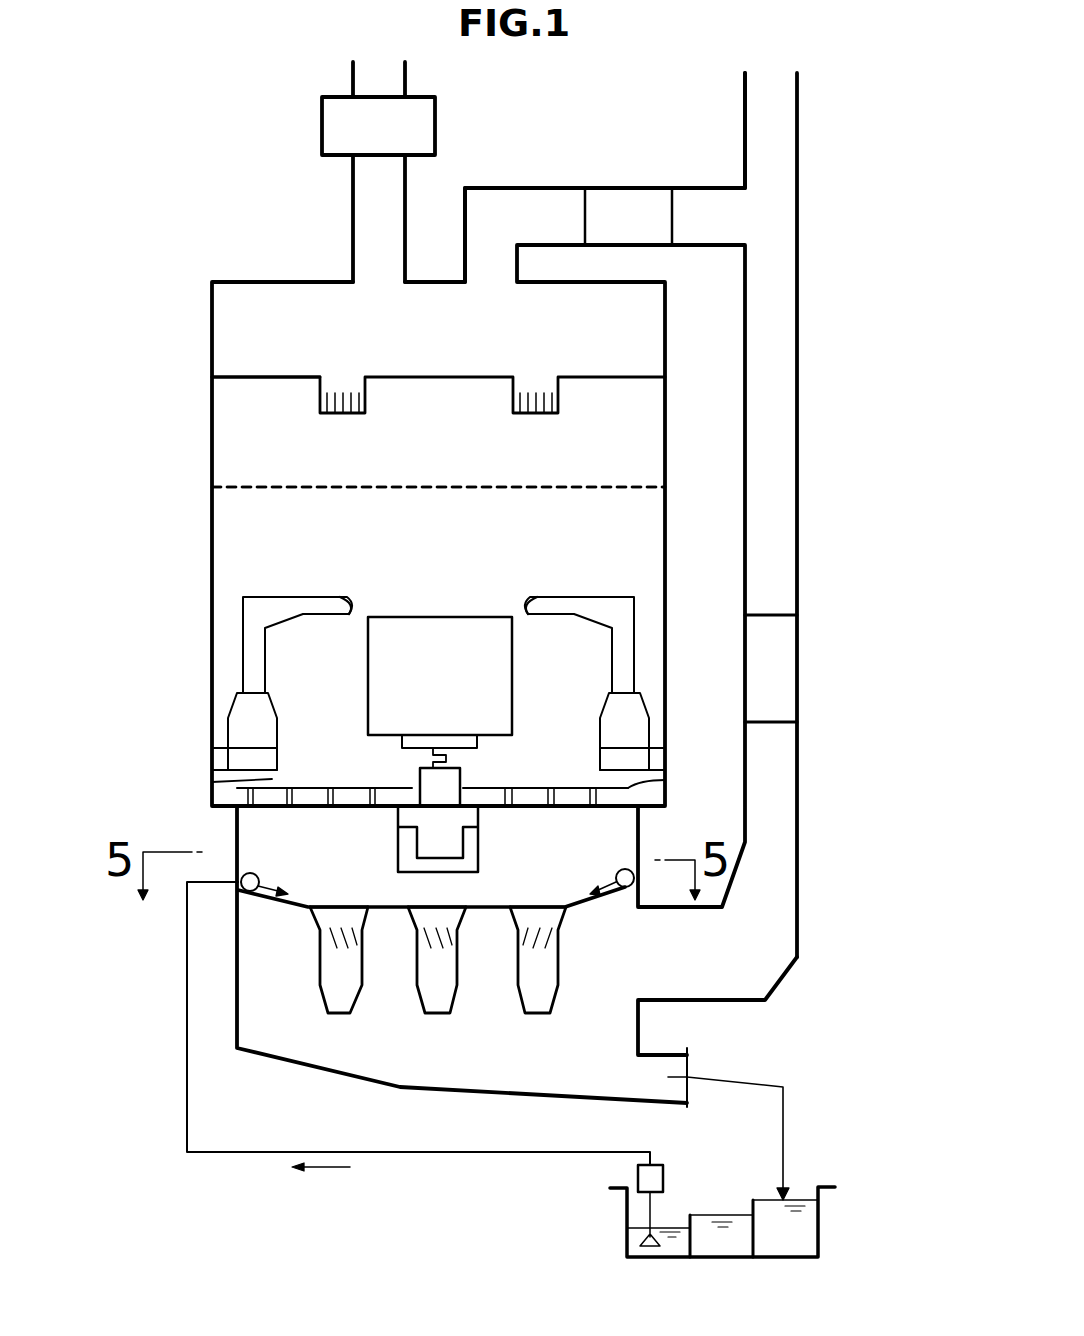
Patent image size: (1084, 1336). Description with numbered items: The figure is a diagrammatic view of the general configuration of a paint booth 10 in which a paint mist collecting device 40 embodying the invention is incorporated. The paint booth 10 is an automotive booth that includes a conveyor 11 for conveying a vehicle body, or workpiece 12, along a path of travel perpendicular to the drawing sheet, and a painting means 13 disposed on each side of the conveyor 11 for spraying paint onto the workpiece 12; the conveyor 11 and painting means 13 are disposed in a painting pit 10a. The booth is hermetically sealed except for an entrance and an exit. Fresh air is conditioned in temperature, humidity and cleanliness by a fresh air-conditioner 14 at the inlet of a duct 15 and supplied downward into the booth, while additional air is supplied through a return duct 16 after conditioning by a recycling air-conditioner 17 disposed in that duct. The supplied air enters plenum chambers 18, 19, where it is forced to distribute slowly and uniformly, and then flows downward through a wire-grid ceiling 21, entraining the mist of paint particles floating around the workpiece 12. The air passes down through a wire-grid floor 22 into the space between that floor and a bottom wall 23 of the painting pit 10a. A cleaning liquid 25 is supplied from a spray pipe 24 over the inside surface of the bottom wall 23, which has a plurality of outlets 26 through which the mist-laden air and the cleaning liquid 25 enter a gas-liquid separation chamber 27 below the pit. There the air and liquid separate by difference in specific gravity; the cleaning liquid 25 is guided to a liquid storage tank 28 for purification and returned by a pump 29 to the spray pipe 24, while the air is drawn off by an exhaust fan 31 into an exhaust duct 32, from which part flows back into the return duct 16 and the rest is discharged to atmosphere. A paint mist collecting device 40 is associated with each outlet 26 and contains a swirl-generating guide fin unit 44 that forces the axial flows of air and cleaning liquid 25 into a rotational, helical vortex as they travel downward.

The paint booth 10 is at (190, 268).
The painting pit 10a is at (255, 562).
The conveyor 11 is at (418, 782).
The vehicle body 12 is at (440, 632).
The painting means 13 is at (348, 600).
The fresh air-conditioner 14 is at (418, 128).
The duct 15 is at (353, 236).
The return duct 16 is at (711, 190).
The recycling air-conditioner 17 is at (621, 202).
The plenum chamber 18 is at (212, 330).
The plenum chamber 19 is at (212, 432).
The wire-grid ceiling 21 is at (268, 490).
The wire-grid floor 22 is at (265, 765).
The bottom wall 23 is at (390, 905).
The spray pipe 24 is at (242, 889).
The cleaning liquid 25 is at (272, 883).
The outlets 26 is at (372, 907).
The gas-liquid separation chamber 27 is at (238, 1012).
The liquid storage tank 28 is at (818, 1225).
The pump 29 is at (638, 1172).
The exhaust fan 31 is at (785, 677).
The exhaust duct 32 is at (797, 522).
The paint mist collecting device 40 is at (360, 990).
The swirl-generating guide fin unit 44 is at (320, 948).